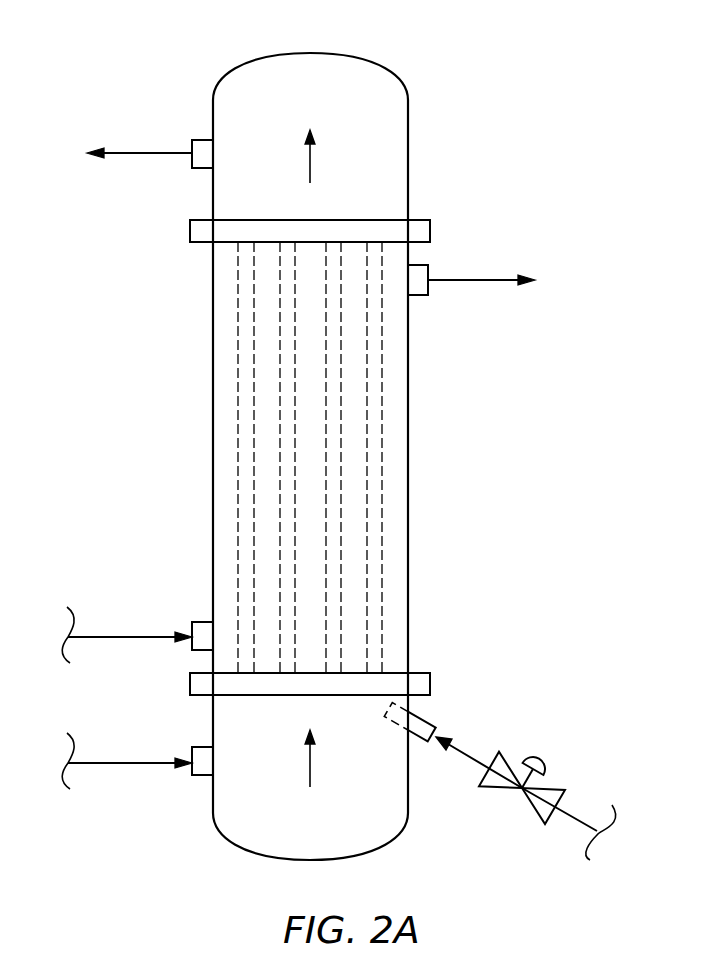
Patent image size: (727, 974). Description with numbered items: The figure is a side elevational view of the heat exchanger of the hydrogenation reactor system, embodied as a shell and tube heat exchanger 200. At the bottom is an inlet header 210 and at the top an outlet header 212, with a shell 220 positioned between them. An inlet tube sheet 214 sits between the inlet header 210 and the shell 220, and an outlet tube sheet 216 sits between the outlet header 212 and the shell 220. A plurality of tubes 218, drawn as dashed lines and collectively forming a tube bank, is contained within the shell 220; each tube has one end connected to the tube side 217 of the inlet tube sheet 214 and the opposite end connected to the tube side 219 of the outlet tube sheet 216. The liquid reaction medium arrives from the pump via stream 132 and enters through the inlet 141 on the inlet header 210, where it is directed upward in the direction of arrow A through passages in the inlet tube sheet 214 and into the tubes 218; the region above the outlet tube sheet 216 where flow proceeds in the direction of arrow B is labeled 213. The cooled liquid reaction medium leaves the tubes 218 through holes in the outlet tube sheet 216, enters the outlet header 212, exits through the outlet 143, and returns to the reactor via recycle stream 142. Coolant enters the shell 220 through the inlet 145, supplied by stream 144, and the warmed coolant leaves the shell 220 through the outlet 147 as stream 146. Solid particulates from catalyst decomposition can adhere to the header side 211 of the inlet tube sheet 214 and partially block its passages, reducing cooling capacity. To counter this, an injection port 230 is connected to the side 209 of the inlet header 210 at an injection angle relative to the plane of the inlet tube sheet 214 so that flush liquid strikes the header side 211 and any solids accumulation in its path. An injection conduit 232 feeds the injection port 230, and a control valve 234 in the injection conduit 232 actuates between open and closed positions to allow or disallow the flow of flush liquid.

The shell and tube heat exchanger 200 is at (466, 71).
The side of the inlet header 209 is at (409, 778).
The inlet header 210 is at (326, 860).
The header side of the inlet tube sheet 211 is at (258, 695).
The outlet header 212 is at (292, 54).
The upper zone / flow direction B 213 is at (264, 220).
The inlet tube sheet 214 is at (190, 683).
The outlet tube sheet 216 is at (190, 228).
The tube side of the inlet tube sheet 217 is at (394, 673).
The plurality of tubes 218 is at (238, 408).
The tube side of the outlet tube sheet 219 is at (228, 242).
The shell 220 is at (214, 490).
The injection port 230 is at (428, 722).
The injection conduit 232 is at (578, 814).
The control valve 234 is at (521, 793).
The stream 132 is at (116, 763).
The inlet 141 is at (202, 775).
The recycle stream 142 is at (140, 153).
The outlet 143 is at (203, 140).
The inlet stream 144 is at (116, 637).
The inlet 145 is at (203, 622).
The outlet stream 146 is at (490, 280).
The outlet 147 is at (428, 295).